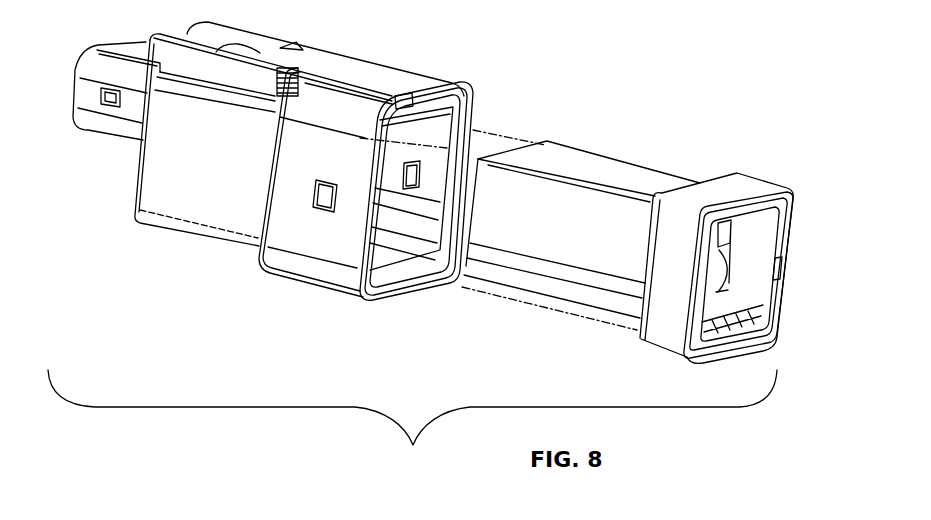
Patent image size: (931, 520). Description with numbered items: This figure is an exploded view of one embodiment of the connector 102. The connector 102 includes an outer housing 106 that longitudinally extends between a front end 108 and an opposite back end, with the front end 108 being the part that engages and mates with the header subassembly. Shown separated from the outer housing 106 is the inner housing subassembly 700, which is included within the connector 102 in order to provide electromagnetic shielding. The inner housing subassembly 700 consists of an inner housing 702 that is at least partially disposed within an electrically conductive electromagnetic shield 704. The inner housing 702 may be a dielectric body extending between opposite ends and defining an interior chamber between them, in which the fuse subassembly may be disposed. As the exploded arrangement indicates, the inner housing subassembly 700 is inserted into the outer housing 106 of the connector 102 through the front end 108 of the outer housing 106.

The connector 102 is at (412, 425).
The outer housing 106 is at (366, 68).
The front end 108 is at (473, 107).
The inner housing subassembly 700 is at (627, 250).
The inner housing 702 is at (665, 345).
The electromagnetic shield 704 is at (548, 292).